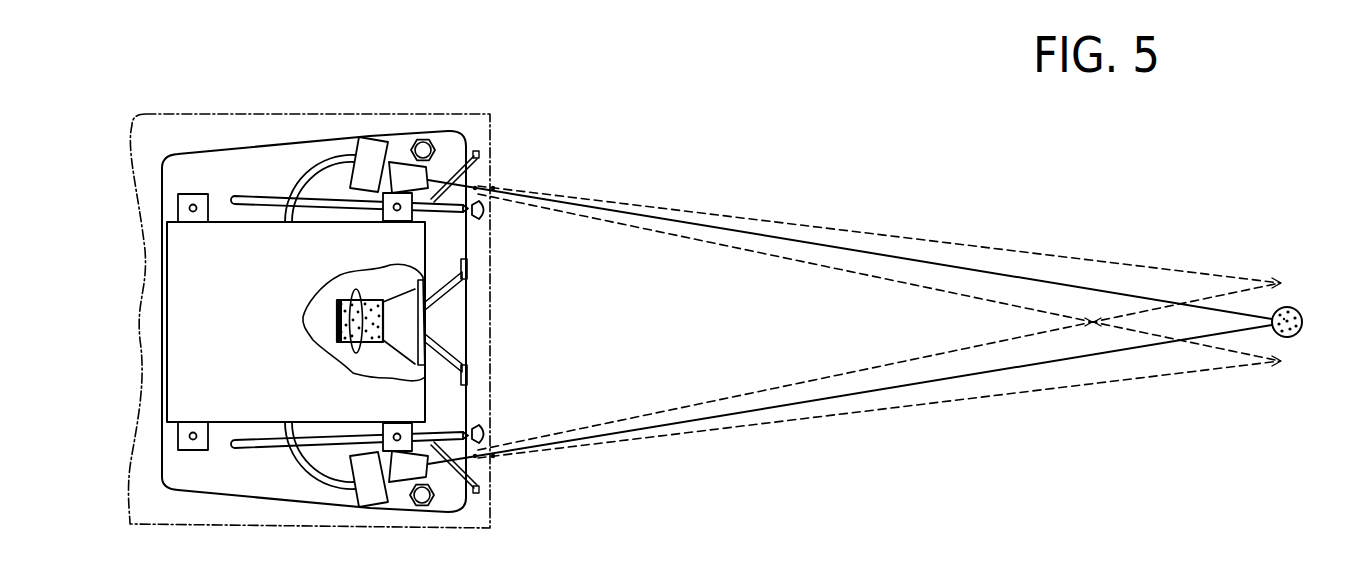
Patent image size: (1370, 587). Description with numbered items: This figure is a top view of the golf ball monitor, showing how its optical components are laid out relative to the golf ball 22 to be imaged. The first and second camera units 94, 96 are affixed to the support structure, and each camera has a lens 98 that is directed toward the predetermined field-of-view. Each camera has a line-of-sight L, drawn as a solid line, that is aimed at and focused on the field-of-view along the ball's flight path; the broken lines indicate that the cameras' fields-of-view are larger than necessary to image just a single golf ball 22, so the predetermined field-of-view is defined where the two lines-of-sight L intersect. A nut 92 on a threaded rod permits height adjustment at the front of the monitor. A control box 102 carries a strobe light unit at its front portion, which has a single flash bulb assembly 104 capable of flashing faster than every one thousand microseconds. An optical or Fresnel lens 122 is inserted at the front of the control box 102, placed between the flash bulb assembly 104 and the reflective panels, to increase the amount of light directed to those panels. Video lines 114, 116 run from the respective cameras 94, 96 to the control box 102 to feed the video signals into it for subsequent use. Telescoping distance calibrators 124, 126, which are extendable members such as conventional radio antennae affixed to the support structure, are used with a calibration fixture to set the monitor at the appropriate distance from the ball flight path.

The golf ball 22 is at (1304, 320).
The nut 92 is at (425, 137).
The first camera unit 94 is at (367, 505).
The second camera unit 96 is at (372, 135).
The lens 98 is at (469, 147).
The control box 102 is at (163, 320).
The flash bulb assembly 104 is at (326, 322).
The video line 114 is at (321, 480).
The video line 116 is at (323, 141).
The Fresnel lens 122 is at (461, 344).
The telescoping distance calibrator 124 is at (489, 433).
The telescoping distance calibrator 126 is at (489, 209).
The line-of-sight L is at (1022, 277).